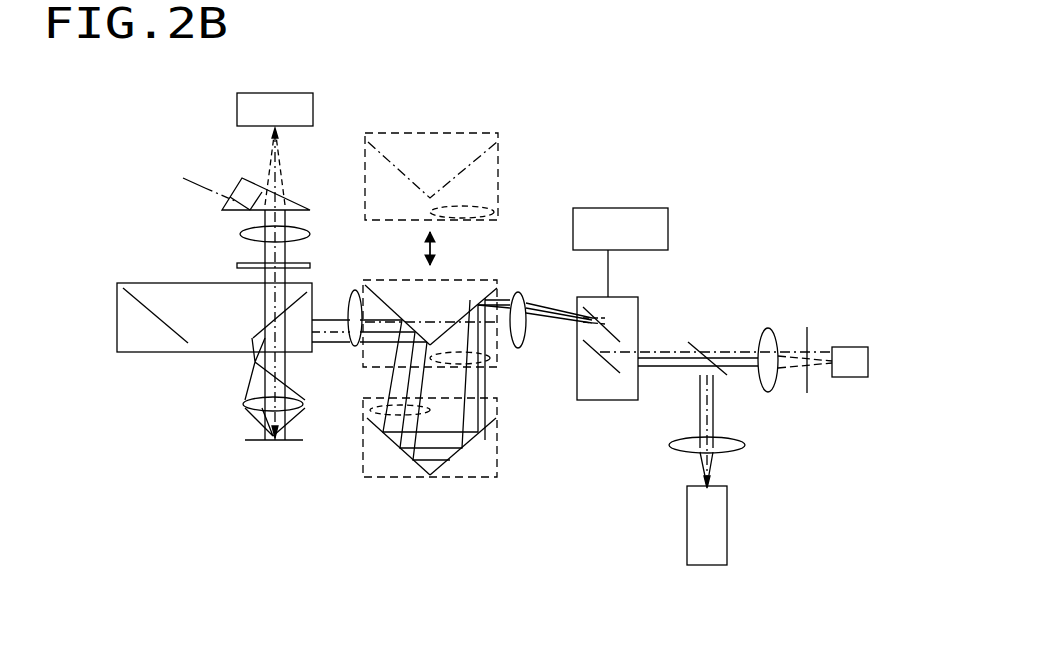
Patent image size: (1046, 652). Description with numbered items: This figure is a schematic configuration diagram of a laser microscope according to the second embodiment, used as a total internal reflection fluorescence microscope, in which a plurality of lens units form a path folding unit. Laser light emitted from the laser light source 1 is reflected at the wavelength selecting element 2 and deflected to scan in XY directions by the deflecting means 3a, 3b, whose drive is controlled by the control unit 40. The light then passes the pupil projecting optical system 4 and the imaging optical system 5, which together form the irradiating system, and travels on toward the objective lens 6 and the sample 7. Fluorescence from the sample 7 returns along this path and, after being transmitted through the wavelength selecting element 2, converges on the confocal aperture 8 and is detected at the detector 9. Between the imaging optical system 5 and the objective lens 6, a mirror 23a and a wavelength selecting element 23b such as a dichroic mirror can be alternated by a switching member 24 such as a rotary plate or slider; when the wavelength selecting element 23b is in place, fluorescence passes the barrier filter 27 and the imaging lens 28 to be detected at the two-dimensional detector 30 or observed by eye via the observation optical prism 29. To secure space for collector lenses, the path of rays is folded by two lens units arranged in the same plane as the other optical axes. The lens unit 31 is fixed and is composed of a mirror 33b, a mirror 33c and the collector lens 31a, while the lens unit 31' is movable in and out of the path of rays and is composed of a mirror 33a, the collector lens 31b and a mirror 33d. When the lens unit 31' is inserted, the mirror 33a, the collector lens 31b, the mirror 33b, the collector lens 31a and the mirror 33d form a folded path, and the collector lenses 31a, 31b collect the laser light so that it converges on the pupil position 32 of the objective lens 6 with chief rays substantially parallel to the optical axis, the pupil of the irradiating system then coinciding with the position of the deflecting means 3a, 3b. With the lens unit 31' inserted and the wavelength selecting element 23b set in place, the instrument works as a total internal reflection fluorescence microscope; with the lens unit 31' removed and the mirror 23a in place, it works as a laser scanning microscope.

The laser light source 1 is at (727, 523).
The wavelength selecting element 2 is at (700, 345).
The deflecting means 3a is at (615, 378).
The deflecting means 3b is at (615, 332).
The pupil projecting optical system 4 is at (522, 293).
The imaging optical system 5 is at (352, 293).
The objective lens 6 is at (245, 402).
The sample 7 is at (245, 440).
The confocal aperture 8 is at (807, 327).
The detector 9 is at (850, 347).
The mirror 23a is at (163, 315).
The wavelength selecting element 23b is at (253, 338).
The switching member 24 is at (132, 279).
The barrier filter 27 is at (237, 265).
The imaging lens 28 is at (240, 234).
The observation optical prism 29 is at (222, 204).
The two-dimensional detector 30 is at (237, 105).
The lens unit 31 is at (441, 306).
The lens unit 31' is at (467, 227).
The collector lens 31a is at (489, 369).
The collector lens 31b is at (477, 210).
The pupil position 32 is at (253, 361).
The mirror 33a is at (470, 308).
The mirror 33b is at (458, 460).
The mirror 33c is at (400, 470).
The mirror 33d is at (392, 305).
The control unit 40 is at (645, 208).